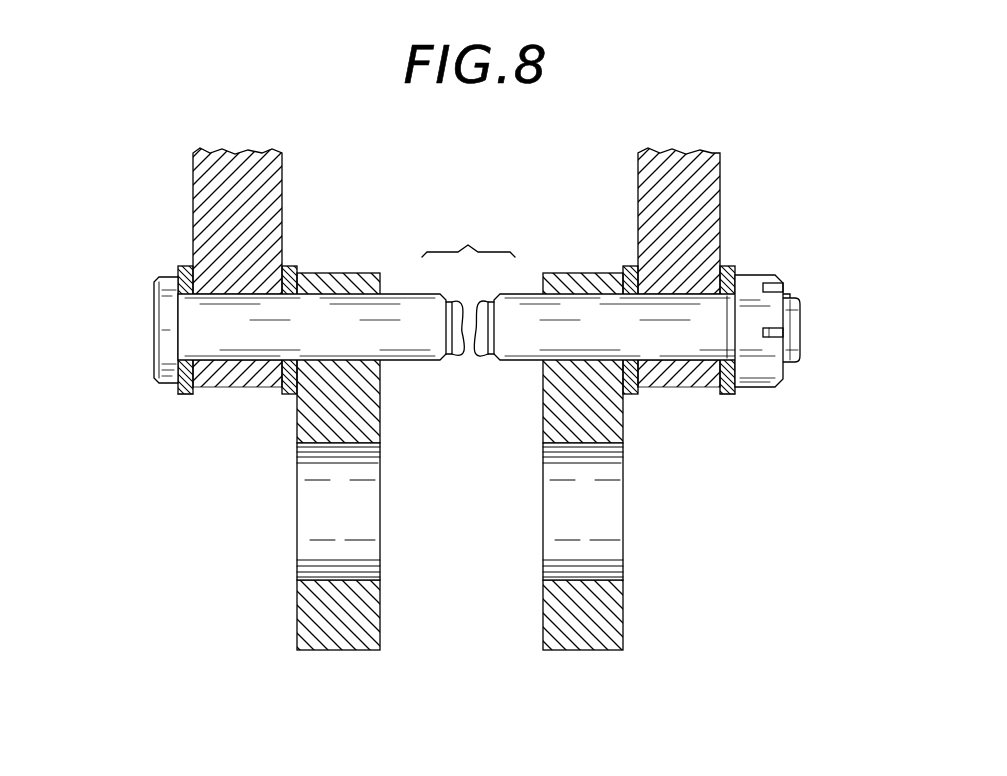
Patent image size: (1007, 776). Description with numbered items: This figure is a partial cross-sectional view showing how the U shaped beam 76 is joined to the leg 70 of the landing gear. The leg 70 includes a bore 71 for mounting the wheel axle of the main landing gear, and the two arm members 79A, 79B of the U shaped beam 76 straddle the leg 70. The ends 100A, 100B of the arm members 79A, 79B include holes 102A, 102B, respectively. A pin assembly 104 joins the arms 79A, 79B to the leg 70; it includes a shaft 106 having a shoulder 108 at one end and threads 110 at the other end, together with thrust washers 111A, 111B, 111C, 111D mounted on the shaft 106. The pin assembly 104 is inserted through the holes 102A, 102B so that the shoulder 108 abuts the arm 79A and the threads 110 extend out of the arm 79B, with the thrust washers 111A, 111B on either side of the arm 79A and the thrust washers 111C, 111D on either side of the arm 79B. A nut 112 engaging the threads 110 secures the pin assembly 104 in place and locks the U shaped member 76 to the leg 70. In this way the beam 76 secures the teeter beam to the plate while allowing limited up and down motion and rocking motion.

The leg 70 is at (337, 650).
The bore 71 is at (297, 553).
The U shaped beam 76 is at (296, 174).
The arm member 79A is at (233, 153).
The arm member 79B is at (675, 153).
The end of arm member 100A is at (200, 394).
The end of arm member 100B is at (700, 394).
The hole 102A is at (262, 362).
The hole 102B is at (672, 362).
The pin assembly 104 is at (462, 355).
The shaft 106 is at (432, 362).
The shoulder 108 is at (176, 317).
The threads 110 is at (800, 355).
The thrust washer 111A is at (185, 266).
The thrust washer 111B is at (290, 266).
The thrust washer 111C is at (628, 266).
The thrust washer 111D is at (730, 266).
The nut 112 is at (785, 286).